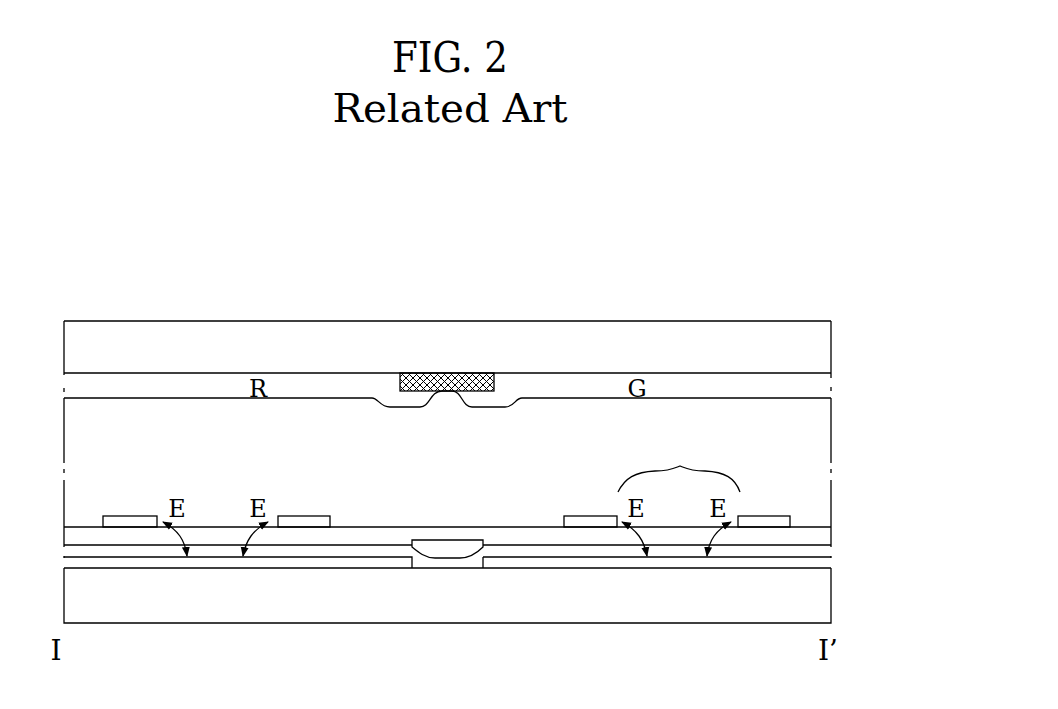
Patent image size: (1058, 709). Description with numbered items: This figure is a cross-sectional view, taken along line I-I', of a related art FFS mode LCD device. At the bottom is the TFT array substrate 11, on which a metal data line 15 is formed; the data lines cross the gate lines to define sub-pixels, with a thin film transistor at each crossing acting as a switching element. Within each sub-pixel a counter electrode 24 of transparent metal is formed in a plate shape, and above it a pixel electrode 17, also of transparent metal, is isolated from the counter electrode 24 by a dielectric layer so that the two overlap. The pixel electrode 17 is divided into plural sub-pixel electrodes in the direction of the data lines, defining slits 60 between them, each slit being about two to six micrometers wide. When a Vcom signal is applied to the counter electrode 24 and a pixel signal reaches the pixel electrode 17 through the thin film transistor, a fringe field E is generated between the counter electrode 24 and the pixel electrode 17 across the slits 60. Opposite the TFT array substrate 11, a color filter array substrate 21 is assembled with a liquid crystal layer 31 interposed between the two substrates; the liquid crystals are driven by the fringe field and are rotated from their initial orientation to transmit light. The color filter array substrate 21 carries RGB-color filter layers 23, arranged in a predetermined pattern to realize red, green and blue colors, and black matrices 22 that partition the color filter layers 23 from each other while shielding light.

The TFT array substrate 11 is at (820, 603).
The data line 15 is at (446, 546).
The pixel electrode 17 is at (772, 519).
The color filter array substrate 21 is at (820, 342).
The black matrix 22 is at (460, 374).
The RGB-color filter layer 23 is at (820, 391).
The counter electrode 24 is at (530, 567).
The liquid crystal layer 31 is at (818, 457).
The slit 60 is at (679, 463).